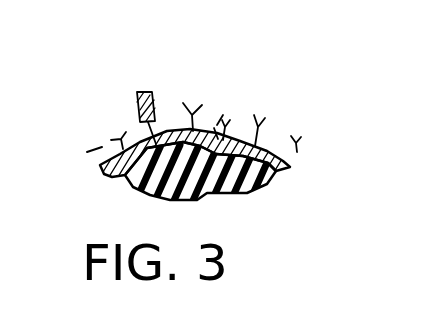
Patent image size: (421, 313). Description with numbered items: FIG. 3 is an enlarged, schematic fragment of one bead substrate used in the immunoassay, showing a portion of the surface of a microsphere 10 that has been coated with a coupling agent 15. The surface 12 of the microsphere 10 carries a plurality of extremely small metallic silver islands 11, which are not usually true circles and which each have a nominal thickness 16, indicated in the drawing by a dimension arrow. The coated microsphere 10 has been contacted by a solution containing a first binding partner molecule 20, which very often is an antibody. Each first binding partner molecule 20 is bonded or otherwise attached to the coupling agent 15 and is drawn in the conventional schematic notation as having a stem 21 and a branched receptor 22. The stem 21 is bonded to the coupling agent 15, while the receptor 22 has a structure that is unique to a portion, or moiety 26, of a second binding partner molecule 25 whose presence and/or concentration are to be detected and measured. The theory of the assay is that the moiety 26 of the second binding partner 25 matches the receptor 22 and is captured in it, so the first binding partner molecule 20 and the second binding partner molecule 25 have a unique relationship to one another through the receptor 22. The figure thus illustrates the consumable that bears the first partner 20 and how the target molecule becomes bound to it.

The microsphere 10 is at (107, 176).
The metallic silver islands 11 is at (172, 136).
The surface 12 is at (133, 143).
The coupling agent 15 is at (278, 163).
The nominal thickness 16 is at (88, 135).
The first binding partner molecule 20 is at (259, 128).
The stem 21 is at (218, 139).
The branched receptor 22 is at (233, 123).
The second binding partner molecule 25 is at (140, 92).
The moiety 26 is at (143, 143).